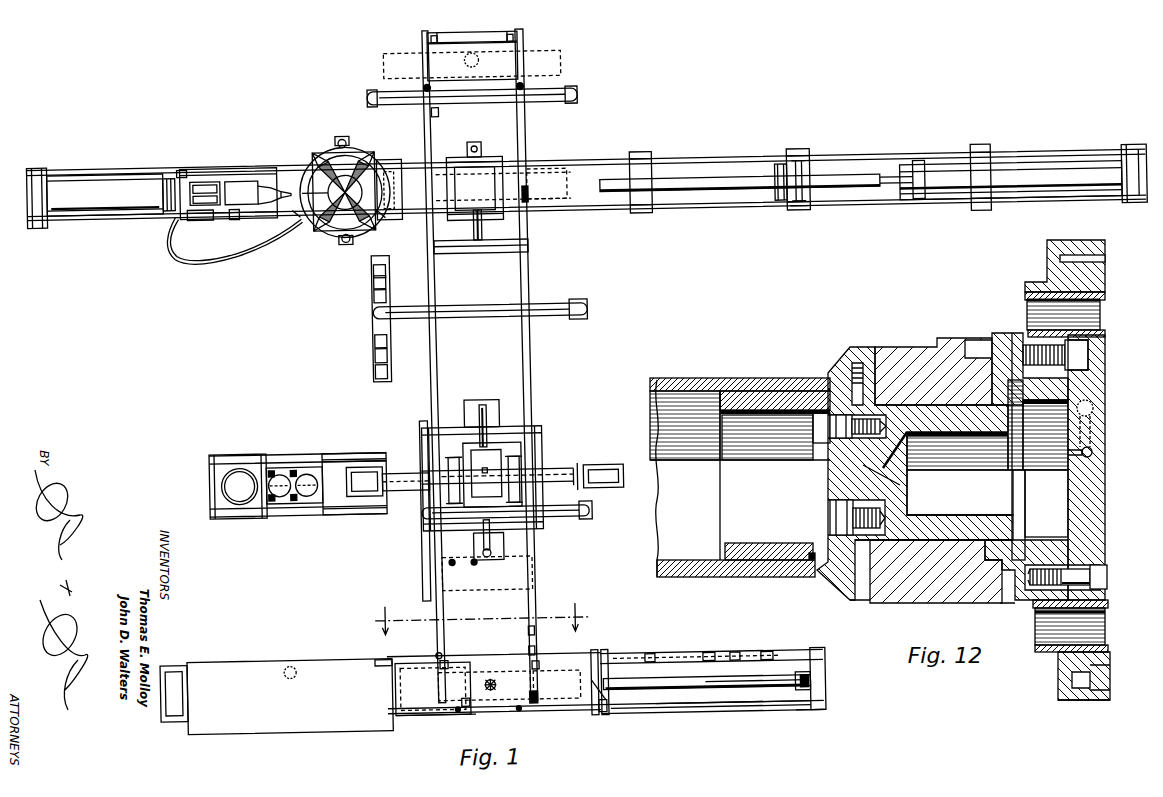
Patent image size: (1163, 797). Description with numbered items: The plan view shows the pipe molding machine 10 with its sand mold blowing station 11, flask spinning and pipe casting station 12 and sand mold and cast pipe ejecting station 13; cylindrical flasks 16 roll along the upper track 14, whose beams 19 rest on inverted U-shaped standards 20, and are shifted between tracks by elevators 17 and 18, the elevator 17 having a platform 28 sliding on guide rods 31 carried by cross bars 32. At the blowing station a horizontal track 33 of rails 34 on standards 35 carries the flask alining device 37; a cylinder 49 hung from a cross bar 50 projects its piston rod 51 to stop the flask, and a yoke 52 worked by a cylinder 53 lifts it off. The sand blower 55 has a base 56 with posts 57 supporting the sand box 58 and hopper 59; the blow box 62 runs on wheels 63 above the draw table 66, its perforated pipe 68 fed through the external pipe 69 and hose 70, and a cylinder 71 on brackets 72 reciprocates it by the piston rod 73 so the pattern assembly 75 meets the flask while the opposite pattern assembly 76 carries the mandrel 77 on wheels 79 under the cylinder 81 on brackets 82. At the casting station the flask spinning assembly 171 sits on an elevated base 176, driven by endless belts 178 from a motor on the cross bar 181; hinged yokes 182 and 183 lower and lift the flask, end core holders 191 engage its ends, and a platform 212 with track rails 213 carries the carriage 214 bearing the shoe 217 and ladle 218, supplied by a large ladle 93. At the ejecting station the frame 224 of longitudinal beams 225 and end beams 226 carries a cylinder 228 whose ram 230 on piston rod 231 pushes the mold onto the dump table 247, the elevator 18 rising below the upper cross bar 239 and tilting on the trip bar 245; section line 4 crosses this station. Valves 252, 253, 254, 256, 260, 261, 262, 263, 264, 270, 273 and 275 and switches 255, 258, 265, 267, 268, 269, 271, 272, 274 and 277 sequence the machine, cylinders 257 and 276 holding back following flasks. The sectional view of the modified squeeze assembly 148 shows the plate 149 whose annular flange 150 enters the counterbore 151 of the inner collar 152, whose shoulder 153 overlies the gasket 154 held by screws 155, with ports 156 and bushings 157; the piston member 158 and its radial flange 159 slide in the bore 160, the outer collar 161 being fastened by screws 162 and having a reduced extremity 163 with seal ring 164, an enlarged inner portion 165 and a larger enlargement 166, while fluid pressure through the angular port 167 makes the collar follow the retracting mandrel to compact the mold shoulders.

In FIG. 1, the pipe molding machine 10 is at (732, 160).
In FIG. 1, the sand mold blowing station 11 is at (254, 168).
In FIG. 1, the flask spinning and pipe casting station 12 is at (418, 490).
In FIG. 1, the sand mold and cast pipe ejecting station 13 is at (660, 706).
In FIG. 1, the upper track 14 is at (531, 345).
In FIG. 1, the cylindrical flask 16 is at (567, 66).
In FIG. 1, the elevator 17 is at (470, 35).
In FIG. 1, the elevator 18 is at (480, 704).
In FIG. 1, the beams or rails 19 is at (439, 345).
In FIG. 1, the inverted U-shaped standards 20 is at (548, 101).
In FIG. 1, the horizontal carriage or platform 28 is at (455, 68).
In FIG. 1, the upright guide rods 31 is at (514, 33).
In FIG. 1, the horizontal cross bars 32 is at (446, 33).
In FIG. 1, the horizontal track 33 is at (706, 207).
In FIG. 1, the beams or rails 34 is at (812, 165).
In FIG. 1, the upright standards 35 is at (40, 218).
In FIG. 1, the flask alining device 37 is at (531, 200).
In FIG. 1, the pressure fluid cylinder 49 is at (477, 225).
In FIG. 1, the cross bar 50 is at (505, 251).
In FIG. 1, the piston rod 51 is at (481, 195).
In FIG. 1, the yoke or U-shaped member 52 is at (503, 157).
In FIG. 1, the pressure fluid cylinder 53 is at (472, 147).
In FIG. 1, the sand blower 55 is at (345, 135).
In FIG. 1, the base 56 is at (316, 158).
In FIG. 1, the upstanding posts 57 is at (346, 240).
In FIG. 1, the sand box 58 is at (389, 217).
In FIG. 1, the hopper 59 is at (315, 224).
In FIG. 1, the blow box 62 is at (220, 175).
In FIG. 1, the wheels 63 is at (270, 175).
In FIG. 1, the draw table 66 is at (402, 160).
In FIG. 1, the perforated pipe 68 is at (240, 182).
In FIG. 1, the external pipe 69 is at (212, 210).
In FIG. 1, the hose 70 is at (232, 250).
In FIG. 1, the horizontal pressure fluid cylinder 71 is at (125, 206).
In FIG. 1, the angular upright brackets 72 is at (31, 180).
In FIG. 1, the piston rod 73 is at (184, 166).
In FIG. 1, the pattern assembly 75 is at (340, 193).
In FIG. 1, the pattern assembly 76 is at (783, 168).
In FIG. 1, the tubular core member or mandrel 77 is at (664, 180).
In FIG. 12, the tubular core member or mandrel 77 is at (680, 380).
In FIG. 1, the wheels 79 is at (800, 210).
In FIG. 1, the cylinder 81 is at (1030, 171).
In FIG. 1, the brackets 82 is at (924, 205).
In FIG. 1, the large ladle 93 is at (240, 462).
In FIG. 1, the flask spinning assembly 171 is at (532, 468).
In FIG. 1, the elevated base 176 is at (541, 430).
In FIG. 1, the endless belts 178 is at (421, 538).
In FIG. 1, the cross bar 181 is at (527, 578).
In FIG. 1, the hinged yoke 182 is at (462, 522).
In FIG. 1, the hinged yoke 183 is at (496, 443).
In FIG. 1, the end core holders 191 is at (356, 463).
In FIG. 1, the platform 212 is at (333, 450).
In FIG. 1, the track rails 213 is at (337, 510).
In FIG. 1, the carriage 214 is at (288, 509).
In FIG. 1, the shoe 217 is at (305, 468).
In FIG. 1, the ladle 218 is at (277, 468).
In FIG. 1, the horizontal frame 224 is at (715, 714).
In FIG. 1, the longitudinal beams 225 is at (800, 714).
In FIG. 1, the end beams 226 is at (178, 658).
In FIG. 1, the pressure fluid cylinder 228 is at (768, 705).
In FIG. 1, the circular ram or head 230 is at (590, 660).
In FIG. 1, the piston rod 231 is at (600, 660).
In FIG. 1, the upper cross bar 239 is at (426, 712).
In FIG. 1, the trip bar 245 is at (394, 679).
In FIG. 1, the dump table 247 is at (240, 656).
In FIG. 1, the valve 252 is at (376, 279).
In FIG. 1, the valve 253 is at (389, 262).
In FIG. 1, the common valve 254 is at (376, 294).
In FIG. 1, the switch 255 is at (452, 250).
In FIG. 1, the valve 256 is at (645, 656).
In FIG. 1, the cylinders 257 is at (430, 86).
In FIG. 1, the switch 258 is at (437, 110).
In FIG. 1, the valve 260 is at (686, 680).
In FIG. 1, the valve 261 is at (376, 338).
In FIG. 1, the valve 262 is at (389, 350).
In FIG. 1, the valve 263 is at (376, 368).
In FIG. 1, the valve 264 is at (704, 656).
In FIG. 1, the switch 265 is at (480, 470).
In FIG. 1, the switch 267 is at (528, 698).
In FIG. 1, the switch 268 is at (525, 650).
In FIG. 1, the switch 269 is at (525, 630).
In FIG. 1, the valve 270 is at (762, 656).
In FIG. 1, the switch 271 is at (808, 685).
In FIG. 1, the switch 272 is at (596, 705).
In FIG. 1, the valve 273 is at (742, 680).
In FIG. 1, the switch 274 is at (462, 705).
In FIG. 1, the valve 275 is at (622, 656).
In FIG. 1, the cylinders 276 is at (436, 660).
In FIG. 1, the switch 277 is at (432, 650).
In FIG. 1, the section line 4 is at (481, 616).
In FIG. 12, the modified squeeze assembly 148 is at (1105, 520).
In FIG. 12, the plate 149 is at (1105, 470).
In FIG. 12, the annular axial flange 150 is at (1040, 540).
In FIG. 12, the axial counterbore 151 is at (1012, 340).
In FIG. 12, the inner pattern element or collar 152 is at (900, 597).
In FIG. 12, the shoulder 153 is at (1060, 660).
In FIG. 12, the gasket 154 is at (1062, 700).
In FIG. 12, the connecting screws 155 is at (1100, 576).
In FIG. 12, the ports 156 is at (1100, 625).
In FIG. 12, the bushings 157 is at (1105, 296).
In FIG. 12, the piston member 158 is at (968, 520).
In FIG. 12, the external radial flange 159 is at (1025, 520).
In FIG. 12, the coaxial bore 160 is at (922, 515).
In FIG. 12, the pattern element or outer collar 161 is at (856, 347).
In FIG. 12, the screws 162 is at (815, 520).
In FIG. 12, the reduced outer extremity 163 is at (722, 504).
In FIG. 12, the seal ring 164 is at (816, 392).
In FIG. 12, the enlarged inner portion 165 is at (895, 347).
In FIG. 12, the enlargement 166 is at (965, 603).
In FIG. 12, the angular port 167 is at (1075, 458).